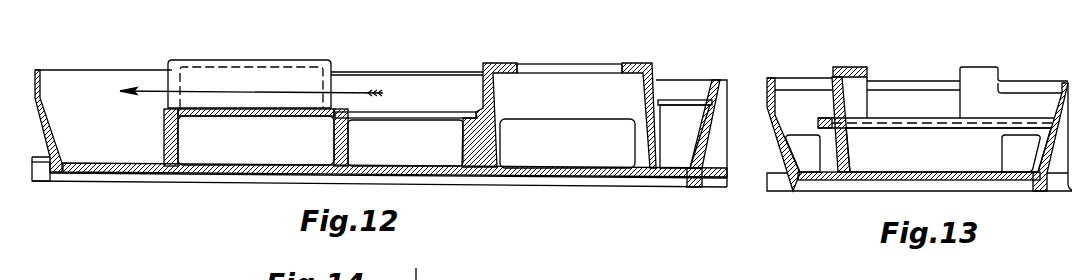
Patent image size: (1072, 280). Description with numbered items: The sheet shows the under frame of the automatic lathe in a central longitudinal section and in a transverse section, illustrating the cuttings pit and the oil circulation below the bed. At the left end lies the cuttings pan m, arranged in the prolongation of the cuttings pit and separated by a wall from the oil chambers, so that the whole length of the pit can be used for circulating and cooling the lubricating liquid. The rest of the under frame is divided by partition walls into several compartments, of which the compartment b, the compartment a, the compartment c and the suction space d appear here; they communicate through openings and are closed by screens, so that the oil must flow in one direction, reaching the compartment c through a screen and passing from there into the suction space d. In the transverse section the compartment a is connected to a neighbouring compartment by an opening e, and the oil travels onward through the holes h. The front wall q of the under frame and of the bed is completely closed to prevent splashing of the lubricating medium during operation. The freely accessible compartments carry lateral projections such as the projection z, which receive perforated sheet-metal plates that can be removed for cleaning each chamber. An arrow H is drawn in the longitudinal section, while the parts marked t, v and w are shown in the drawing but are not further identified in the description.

In FIG. 12, the cuttings pan m is at (72, 121).
In FIG. 12, the compartment b is at (256, 137).
In FIG. 12, the compartment a is at (405, 143).
In FIG. 13, the compartment a is at (948, 150).
In FIG. 12, the compartment c is at (559, 115).
In FIG. 12, the suction space d is at (690, 133).
In FIG. 12, the cover lid t is at (254, 60).
In FIG. 13, the cover lid t is at (855, 67).
In FIG. 12, the direction of flow arrow H is at (236, 94).
In FIG. 12, the lateral projection z is at (398, 118).
In FIG. 12, the cover plate v is at (548, 63).
In FIG. 12, the plate w is at (678, 101).
In FIG. 13, the front wall q is at (832, 100).
In FIG. 13, the holes h is at (803, 153).
In FIG. 13, the opening e is at (1021, 153).